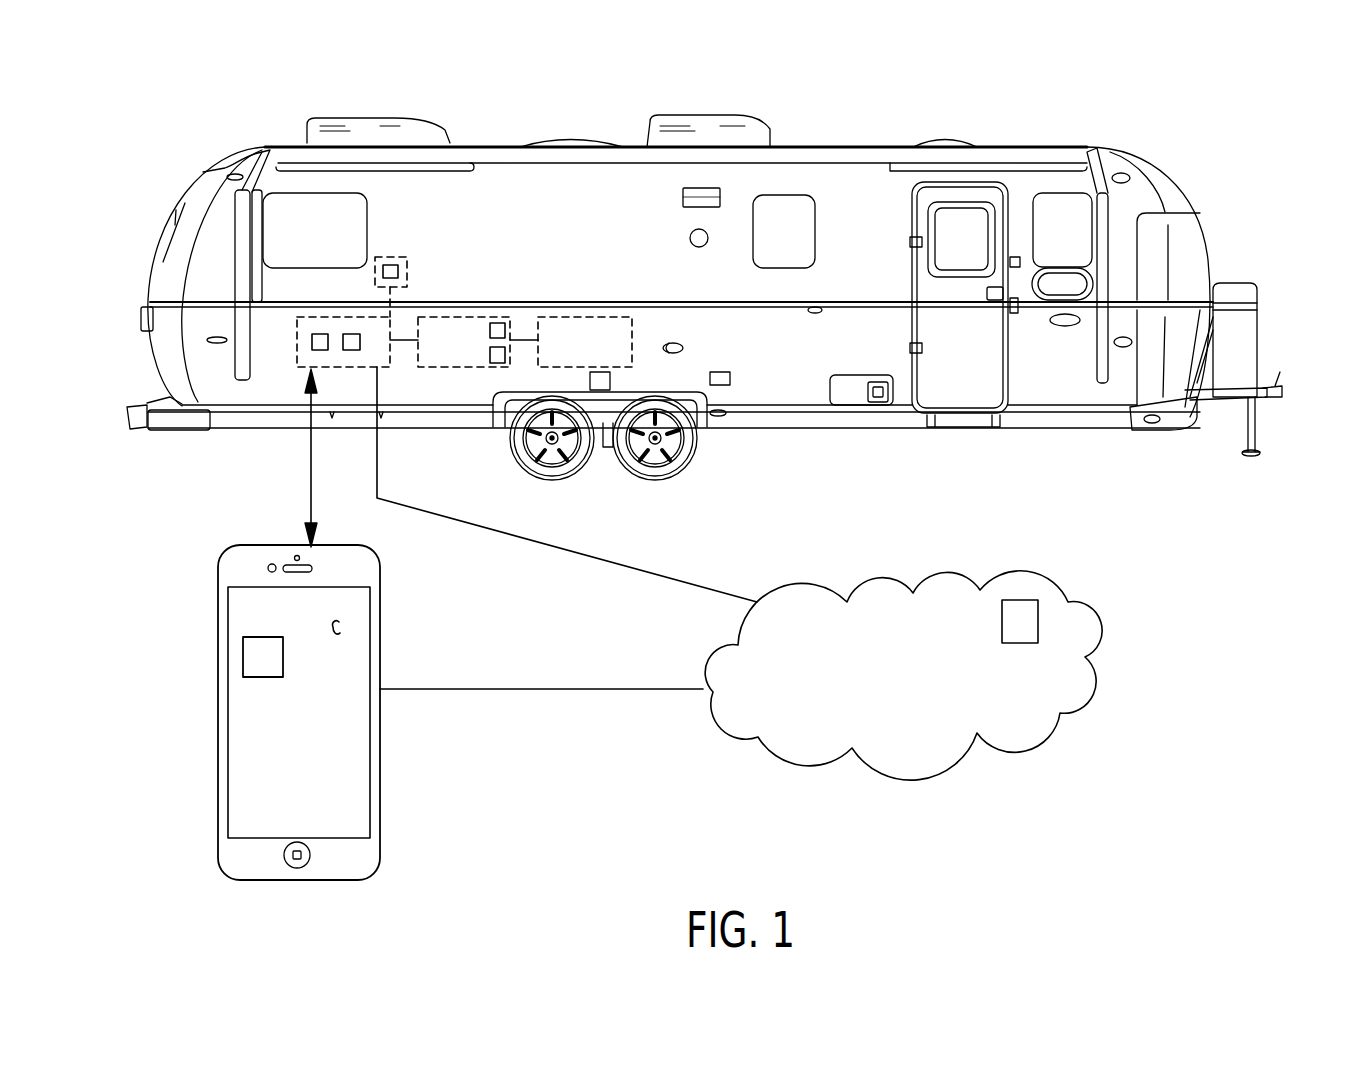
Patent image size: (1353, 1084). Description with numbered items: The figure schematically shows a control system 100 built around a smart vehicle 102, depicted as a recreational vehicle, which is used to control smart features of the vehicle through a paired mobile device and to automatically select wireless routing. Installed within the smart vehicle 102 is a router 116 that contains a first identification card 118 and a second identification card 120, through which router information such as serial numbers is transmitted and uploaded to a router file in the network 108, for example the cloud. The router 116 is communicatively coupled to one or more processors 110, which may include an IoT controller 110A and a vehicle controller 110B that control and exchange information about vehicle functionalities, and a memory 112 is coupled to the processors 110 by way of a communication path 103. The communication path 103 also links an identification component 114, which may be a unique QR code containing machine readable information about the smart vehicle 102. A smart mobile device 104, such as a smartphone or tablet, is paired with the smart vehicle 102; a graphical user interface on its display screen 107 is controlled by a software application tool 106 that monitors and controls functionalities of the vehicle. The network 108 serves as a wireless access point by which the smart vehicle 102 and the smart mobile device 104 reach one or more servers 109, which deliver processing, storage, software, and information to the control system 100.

The control system 100 is at (1199, 142).
The smart vehicle 102 is at (1016, 144).
The communication path 103 is at (523, 338).
The smart mobile device 104 is at (210, 590).
The software application tool 106 is at (243, 657).
The display screen 107 is at (333, 627).
The network 108 is at (910, 683).
The servers 109 is at (1033, 638).
The processors 110 is at (478, 357).
The IoT controller 110A is at (498, 323).
The vehicle controller 110B is at (497, 365).
The memory 112 is at (598, 357).
The identification component 114 is at (403, 263).
The router 116 is at (297, 346).
The first identification card 118 is at (318, 333).
The second identification card 120 is at (350, 333).